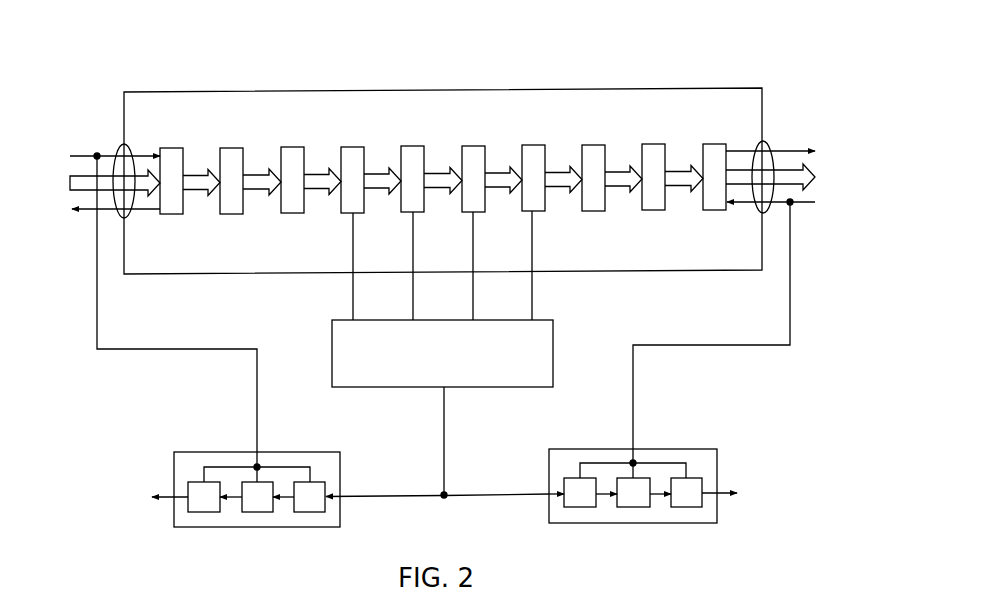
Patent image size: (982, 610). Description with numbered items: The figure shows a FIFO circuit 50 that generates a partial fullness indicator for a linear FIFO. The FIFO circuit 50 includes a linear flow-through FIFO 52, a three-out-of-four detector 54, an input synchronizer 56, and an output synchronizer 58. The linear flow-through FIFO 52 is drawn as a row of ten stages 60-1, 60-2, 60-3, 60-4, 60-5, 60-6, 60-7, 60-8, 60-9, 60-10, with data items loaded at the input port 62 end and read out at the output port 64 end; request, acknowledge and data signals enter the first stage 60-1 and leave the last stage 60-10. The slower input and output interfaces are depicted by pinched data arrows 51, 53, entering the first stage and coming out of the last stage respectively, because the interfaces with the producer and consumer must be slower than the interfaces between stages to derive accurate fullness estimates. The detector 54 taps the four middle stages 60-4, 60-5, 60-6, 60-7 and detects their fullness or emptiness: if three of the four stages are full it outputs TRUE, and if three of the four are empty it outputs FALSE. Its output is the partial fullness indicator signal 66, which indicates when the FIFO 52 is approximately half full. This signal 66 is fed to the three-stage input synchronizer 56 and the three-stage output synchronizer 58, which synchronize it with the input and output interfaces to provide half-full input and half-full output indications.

The FIFO circuit 50 is at (272, 58).
The pinched data arrow 51 is at (92, 182).
The linear flow-through FIFO 52 is at (628, 88).
The pinched data arrow 53 is at (792, 179).
The 3-out-of-4 detector 54 is at (553, 330).
The input synchronizer 56 is at (205, 452).
The output synchronizer 58 is at (685, 449).
The stage 60-1 is at (172, 214).
The stage 60-2 is at (233, 214).
The stage 60-3 is at (293, 213).
The stage 60-4 is at (352, 213).
The stage 60-5 is at (412, 212).
The stage 60-6 is at (480, 212).
The stage 60-7 is at (540, 211).
The stage 60-8 is at (600, 211).
The stage 60-9 is at (655, 210).
The stage 60-10 is at (716, 210).
The input port 62 is at (118, 150).
The output port 64 is at (772, 146).
The partial fullness indicator signal 66 is at (444, 413).